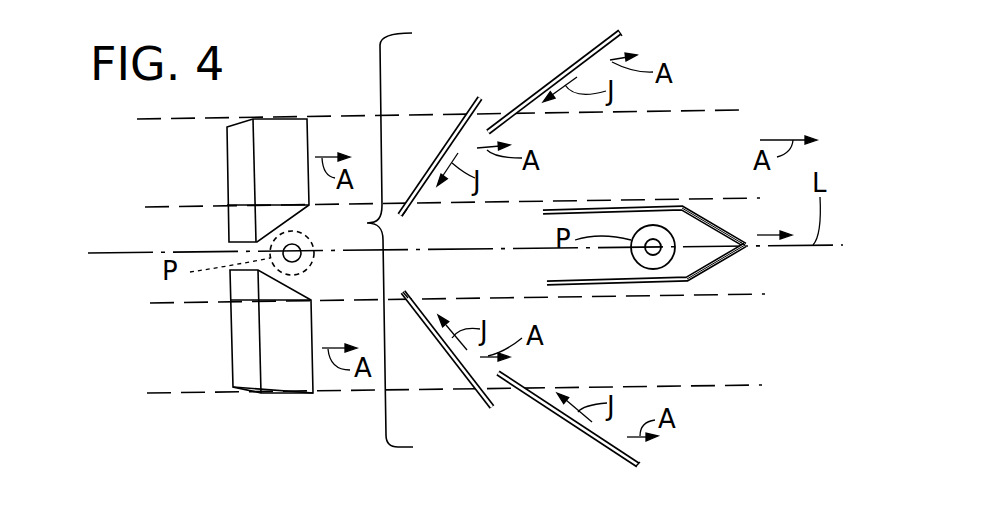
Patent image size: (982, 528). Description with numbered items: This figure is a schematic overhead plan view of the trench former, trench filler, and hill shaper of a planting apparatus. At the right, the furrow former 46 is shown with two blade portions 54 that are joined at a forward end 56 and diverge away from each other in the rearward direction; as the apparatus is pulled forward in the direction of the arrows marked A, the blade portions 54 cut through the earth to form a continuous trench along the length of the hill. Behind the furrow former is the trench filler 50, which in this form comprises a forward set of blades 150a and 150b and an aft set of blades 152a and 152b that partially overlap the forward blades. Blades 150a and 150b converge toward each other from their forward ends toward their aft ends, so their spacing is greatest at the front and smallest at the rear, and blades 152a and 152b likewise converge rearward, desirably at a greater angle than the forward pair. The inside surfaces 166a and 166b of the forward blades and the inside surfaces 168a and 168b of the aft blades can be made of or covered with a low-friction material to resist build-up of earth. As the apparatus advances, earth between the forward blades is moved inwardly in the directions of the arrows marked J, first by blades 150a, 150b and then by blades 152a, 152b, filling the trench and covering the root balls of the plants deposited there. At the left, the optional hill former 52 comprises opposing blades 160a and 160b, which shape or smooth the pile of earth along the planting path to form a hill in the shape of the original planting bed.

The furrow former 46 is at (640, 207).
The trench filler 50 is at (371, 240).
The hill former 52 is at (264, 406).
The blade portions 54 is at (718, 220).
The forward end 56 is at (746, 247).
The forward blade 150a is at (550, 415).
The forward blade 150b is at (543, 85).
The aft blade 152a is at (453, 360).
The aft blade 152b is at (435, 163).
The blade 160a is at (290, 378).
The blade 160b is at (278, 135).
The inside surface 166a is at (628, 452).
The inside surface 166b is at (622, 36).
The inside surface 168a is at (412, 292).
The inside surface 168b is at (410, 208).